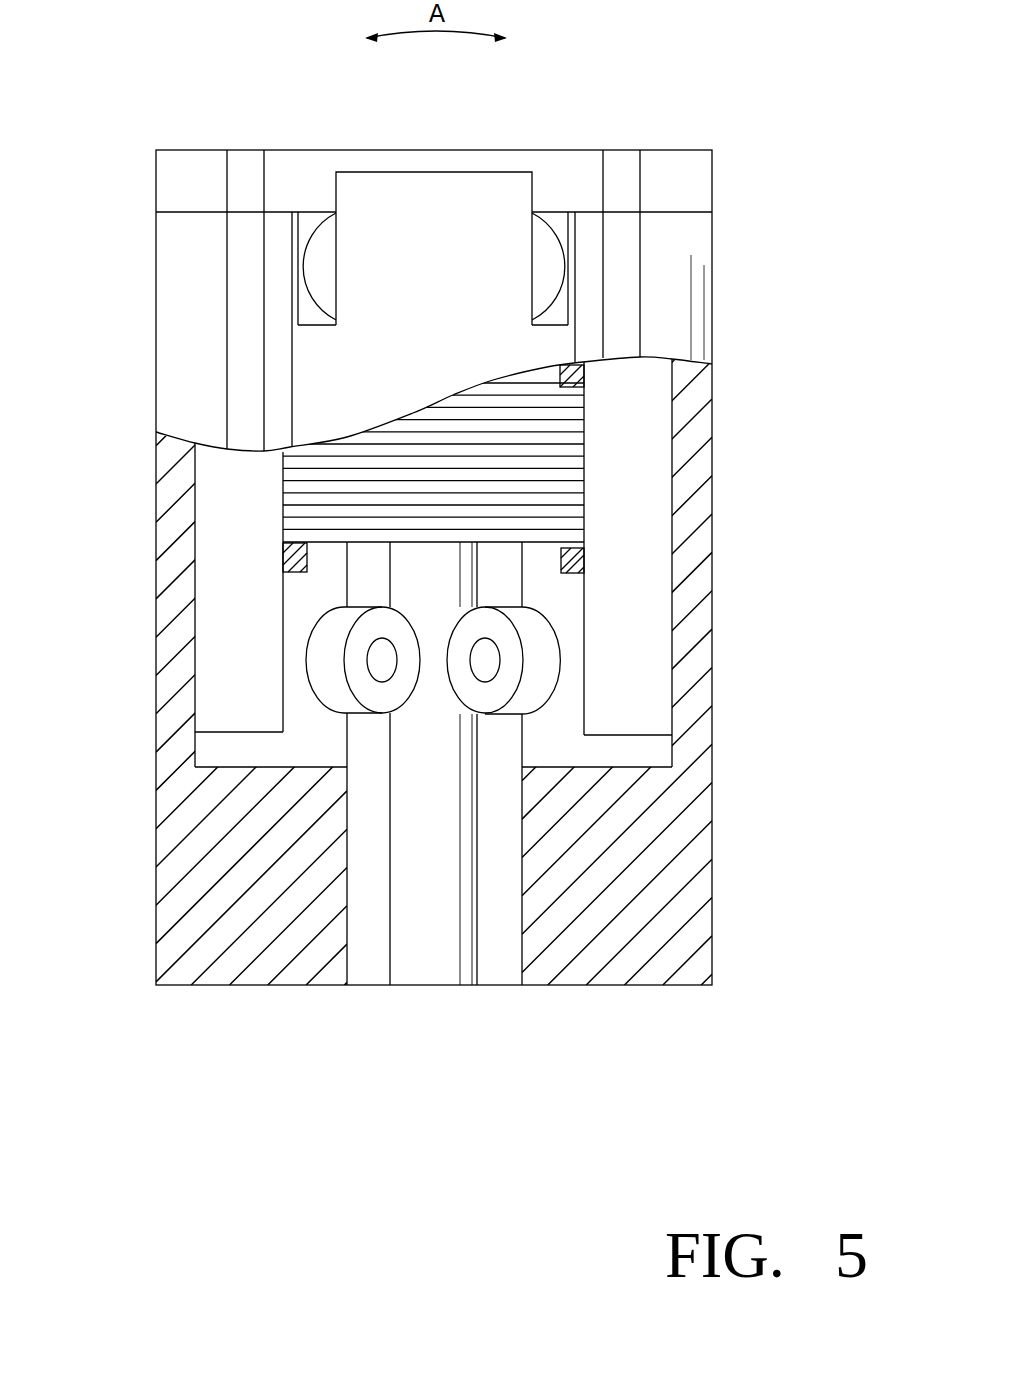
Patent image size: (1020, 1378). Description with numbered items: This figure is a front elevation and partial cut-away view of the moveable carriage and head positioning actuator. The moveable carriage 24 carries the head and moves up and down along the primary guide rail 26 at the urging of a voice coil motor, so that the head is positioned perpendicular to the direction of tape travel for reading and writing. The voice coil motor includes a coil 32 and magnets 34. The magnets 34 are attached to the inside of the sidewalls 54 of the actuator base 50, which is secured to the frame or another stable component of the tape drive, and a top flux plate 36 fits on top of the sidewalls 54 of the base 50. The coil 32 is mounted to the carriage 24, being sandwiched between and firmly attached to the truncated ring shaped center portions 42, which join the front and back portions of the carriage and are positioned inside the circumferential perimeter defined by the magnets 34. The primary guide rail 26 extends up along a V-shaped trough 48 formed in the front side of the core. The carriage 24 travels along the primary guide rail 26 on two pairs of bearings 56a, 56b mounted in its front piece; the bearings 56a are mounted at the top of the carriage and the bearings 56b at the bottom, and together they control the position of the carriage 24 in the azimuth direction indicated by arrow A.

The moveable carriage 24 is at (536, 189).
The primary guide rail 26 is at (423, 978).
The coil 32 is at (462, 413).
The magnets 34 is at (207, 663).
The top flux plate 36 is at (687, 183).
The truncated ring shaped center portions 42 is at (588, 380).
The V-shaped trough 48 is at (358, 586).
The actuator base 50 is at (165, 849).
The sidewalls 54 is at (185, 343).
The bearings 56a is at (538, 258).
The bearings 56b is at (461, 688).